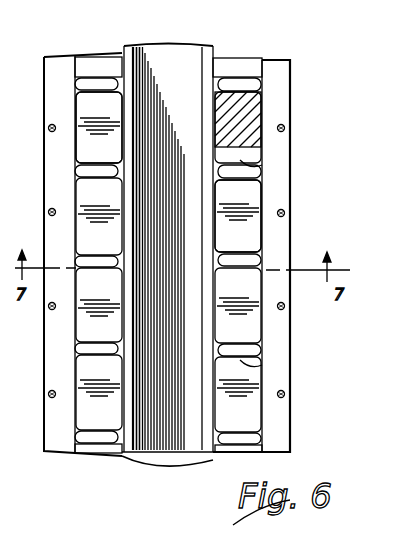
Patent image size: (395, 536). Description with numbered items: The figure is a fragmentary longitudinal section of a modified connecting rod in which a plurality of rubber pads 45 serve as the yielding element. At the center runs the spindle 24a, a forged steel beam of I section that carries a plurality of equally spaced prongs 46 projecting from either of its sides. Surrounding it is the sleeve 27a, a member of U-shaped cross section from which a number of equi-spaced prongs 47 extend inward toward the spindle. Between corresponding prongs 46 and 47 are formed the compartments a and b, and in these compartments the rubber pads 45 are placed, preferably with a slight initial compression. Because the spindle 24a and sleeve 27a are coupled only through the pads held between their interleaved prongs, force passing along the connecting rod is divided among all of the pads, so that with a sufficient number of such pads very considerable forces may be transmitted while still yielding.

The spindle 24a is at (209, 55).
The sleeve 27a is at (284, 417).
The rubber pads 45 is at (262, 125).
The prongs 46 is at (95, 82).
The prongs 47 is at (245, 172).
The compartment a is at (245, 215).
The compartment b is at (262, 108).